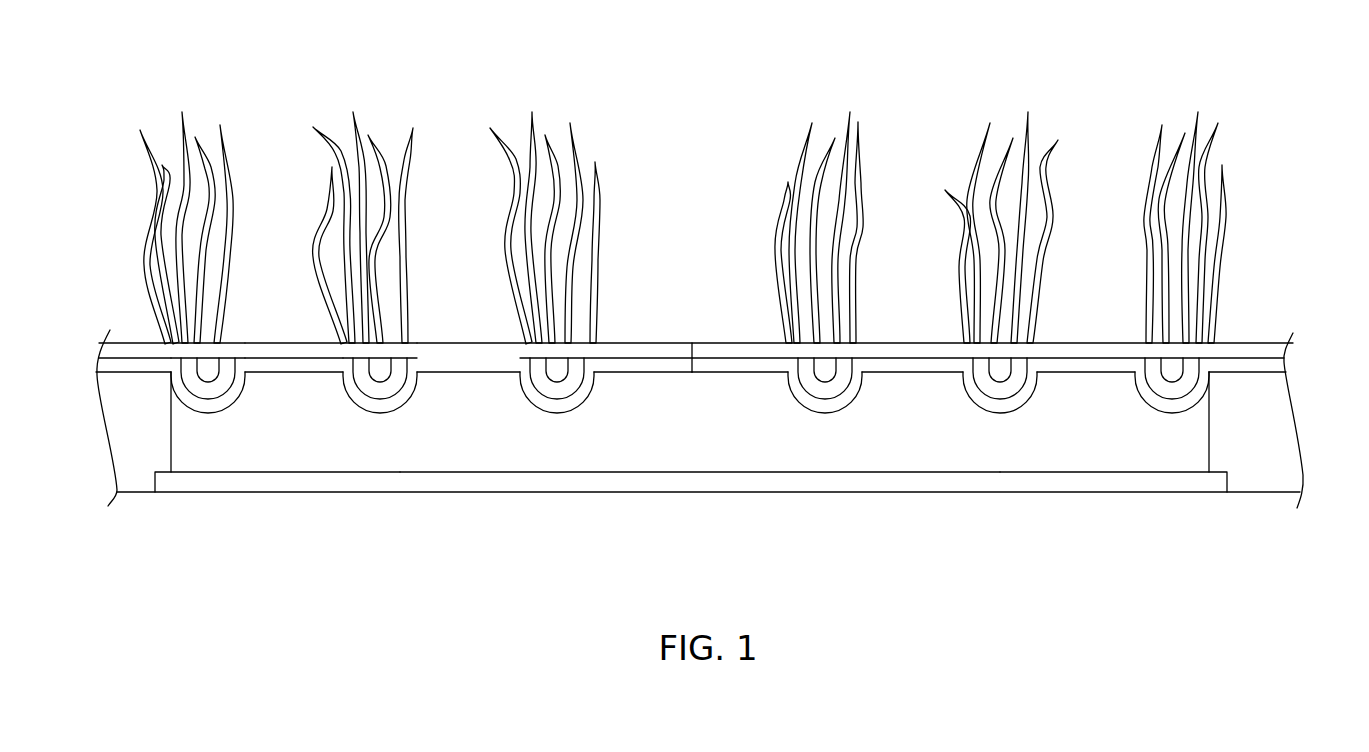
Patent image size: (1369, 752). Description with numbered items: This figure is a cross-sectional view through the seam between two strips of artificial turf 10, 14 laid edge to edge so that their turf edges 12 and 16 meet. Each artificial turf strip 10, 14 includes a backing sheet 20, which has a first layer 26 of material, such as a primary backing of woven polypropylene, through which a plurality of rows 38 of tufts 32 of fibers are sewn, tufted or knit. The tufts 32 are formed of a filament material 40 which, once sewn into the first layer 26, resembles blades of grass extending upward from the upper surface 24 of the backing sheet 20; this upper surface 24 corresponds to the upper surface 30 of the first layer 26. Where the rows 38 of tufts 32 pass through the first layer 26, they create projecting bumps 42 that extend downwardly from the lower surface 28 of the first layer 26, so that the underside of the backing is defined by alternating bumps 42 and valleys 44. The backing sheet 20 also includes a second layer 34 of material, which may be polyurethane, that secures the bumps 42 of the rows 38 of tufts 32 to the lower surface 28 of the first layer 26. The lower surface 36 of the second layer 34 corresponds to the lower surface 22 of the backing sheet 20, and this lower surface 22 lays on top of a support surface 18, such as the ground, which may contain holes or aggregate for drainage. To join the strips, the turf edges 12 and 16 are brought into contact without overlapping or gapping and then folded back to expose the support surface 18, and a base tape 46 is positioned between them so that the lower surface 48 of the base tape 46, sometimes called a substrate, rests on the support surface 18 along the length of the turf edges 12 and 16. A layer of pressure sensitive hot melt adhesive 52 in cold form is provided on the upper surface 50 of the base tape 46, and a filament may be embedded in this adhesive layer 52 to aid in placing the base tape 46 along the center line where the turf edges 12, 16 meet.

The artificial turf strip 10 is at (631, 178).
The turf edge 12 is at (658, 343).
The artificial turf strip 14 is at (765, 177).
The turf edge 16 is at (758, 343).
The support surface 18 is at (1250, 495).
The backing sheet 20 is at (457, 342).
The lower surface of backing sheet 22 is at (1266, 390).
The upper surface of backing sheet 24 is at (1295, 342).
The first layer 26 is at (275, 343).
The lower surface of first layer 28 is at (277, 360).
The upper surface of first layer 30 is at (310, 343).
The tuft 32 is at (214, 97).
The second layer 34 is at (623, 370).
The lower surface of second layer 36 is at (670, 373).
The row of tufts 38 is at (151, 383).
The filament material 40 is at (152, 213).
The bump 42 is at (540, 402).
The valley 44 is at (911, 392).
The base tape 46 is at (1237, 423).
The lower surface of base tape 48 is at (1163, 483).
The upper surface of base tape 50 is at (1083, 473).
The pressure sensitive hot melt adhesive layer 52 is at (623, 456).